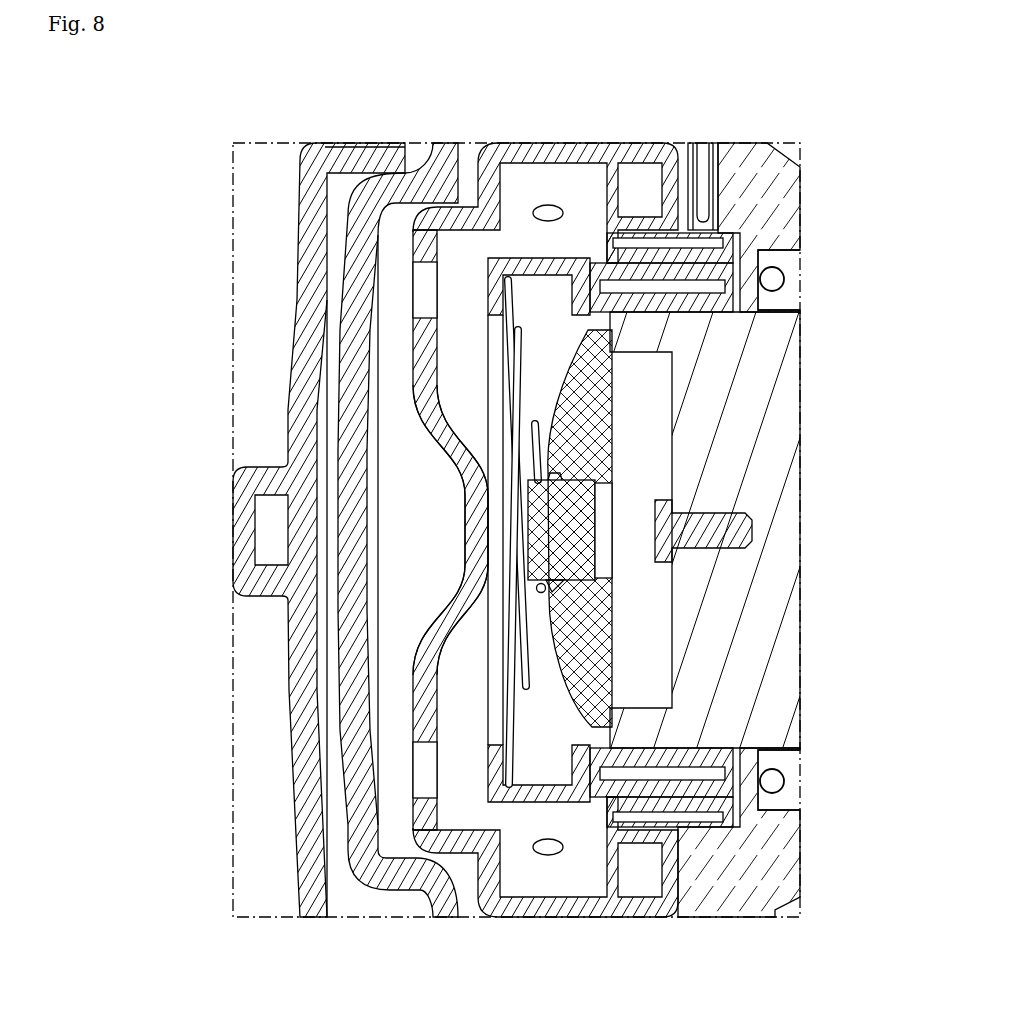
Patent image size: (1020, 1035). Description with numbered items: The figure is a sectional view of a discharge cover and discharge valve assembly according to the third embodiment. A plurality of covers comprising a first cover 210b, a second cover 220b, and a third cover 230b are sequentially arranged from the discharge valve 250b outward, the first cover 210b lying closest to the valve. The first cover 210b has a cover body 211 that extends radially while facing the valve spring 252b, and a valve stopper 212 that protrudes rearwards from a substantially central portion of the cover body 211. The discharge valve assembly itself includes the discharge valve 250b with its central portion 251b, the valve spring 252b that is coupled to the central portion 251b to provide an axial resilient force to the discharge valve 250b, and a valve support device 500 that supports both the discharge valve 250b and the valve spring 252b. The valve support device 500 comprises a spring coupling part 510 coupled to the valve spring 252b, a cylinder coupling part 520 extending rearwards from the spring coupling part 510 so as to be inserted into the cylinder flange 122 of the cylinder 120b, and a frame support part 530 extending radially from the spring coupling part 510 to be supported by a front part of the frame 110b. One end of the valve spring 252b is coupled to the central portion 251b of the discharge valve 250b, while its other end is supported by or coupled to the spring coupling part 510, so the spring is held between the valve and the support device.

The frame 110b is at (740, 863).
The cylinder 120b is at (792, 760).
The cylinder flange 122 is at (637, 250).
The first cover 210b is at (511, 157).
The cover body 211 is at (420, 257).
The valve stopper 212 is at (478, 532).
The second cover 220b is at (393, 196).
The third cover 230b is at (343, 158).
The discharge valve 250b is at (615, 418).
The central portion 251b is at (542, 553).
The valve spring 252b is at (523, 638).
The valve support device 500 is at (518, 630).
The spring coupling part 510 is at (488, 292).
The cylinder coupling part 520 is at (715, 270).
The frame support part 530 is at (697, 200).